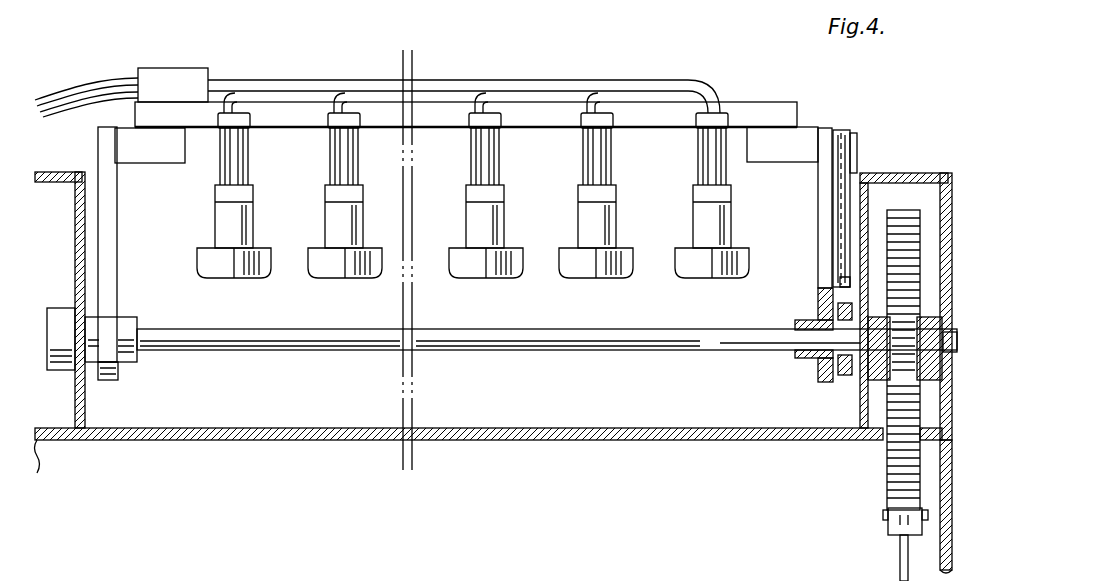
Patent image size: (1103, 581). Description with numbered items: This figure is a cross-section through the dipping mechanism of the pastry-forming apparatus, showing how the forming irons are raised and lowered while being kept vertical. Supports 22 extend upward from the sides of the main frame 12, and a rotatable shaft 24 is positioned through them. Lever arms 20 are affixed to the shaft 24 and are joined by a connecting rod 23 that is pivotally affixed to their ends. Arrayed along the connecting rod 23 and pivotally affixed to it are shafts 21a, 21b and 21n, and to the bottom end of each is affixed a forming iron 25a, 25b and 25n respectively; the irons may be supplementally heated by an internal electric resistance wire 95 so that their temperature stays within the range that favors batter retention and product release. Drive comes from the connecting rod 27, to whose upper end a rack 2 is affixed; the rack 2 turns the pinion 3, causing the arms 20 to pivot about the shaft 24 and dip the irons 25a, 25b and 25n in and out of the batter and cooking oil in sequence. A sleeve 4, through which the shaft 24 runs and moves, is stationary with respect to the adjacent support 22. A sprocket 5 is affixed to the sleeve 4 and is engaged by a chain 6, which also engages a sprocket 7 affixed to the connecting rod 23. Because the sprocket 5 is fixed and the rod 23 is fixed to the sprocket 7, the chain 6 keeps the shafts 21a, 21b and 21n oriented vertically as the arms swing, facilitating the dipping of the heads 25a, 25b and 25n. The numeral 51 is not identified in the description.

The rack 2 is at (895, 460).
The pinion 3 is at (915, 326).
The sleeve 4 is at (820, 320).
The sprocket 5 is at (856, 380).
The chain 6 is at (875, 205).
The sprocket 7 is at (847, 150).
The main frame 12 is at (954, 532).
The lever arms 20 is at (116, 222).
The shaft 21a is at (238, 149).
The shaft 21b is at (345, 148).
The shaft 21n is at (698, 154).
The supports 22 is at (68, 172).
The connecting rod 23 is at (750, 103).
The rotatable shaft 24 is at (517, 348).
The forming iron 25a is at (242, 272).
The forming iron 25b is at (346, 278).
The forming iron 25n is at (710, 276).
The connecting rod 27 is at (903, 558).
The member 51 is at (137, 580).
The internal electric resistance wire 95 is at (220, 160).